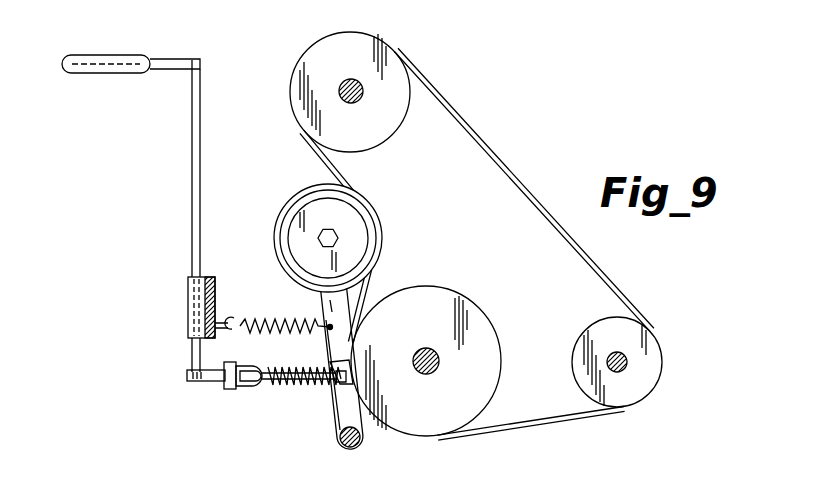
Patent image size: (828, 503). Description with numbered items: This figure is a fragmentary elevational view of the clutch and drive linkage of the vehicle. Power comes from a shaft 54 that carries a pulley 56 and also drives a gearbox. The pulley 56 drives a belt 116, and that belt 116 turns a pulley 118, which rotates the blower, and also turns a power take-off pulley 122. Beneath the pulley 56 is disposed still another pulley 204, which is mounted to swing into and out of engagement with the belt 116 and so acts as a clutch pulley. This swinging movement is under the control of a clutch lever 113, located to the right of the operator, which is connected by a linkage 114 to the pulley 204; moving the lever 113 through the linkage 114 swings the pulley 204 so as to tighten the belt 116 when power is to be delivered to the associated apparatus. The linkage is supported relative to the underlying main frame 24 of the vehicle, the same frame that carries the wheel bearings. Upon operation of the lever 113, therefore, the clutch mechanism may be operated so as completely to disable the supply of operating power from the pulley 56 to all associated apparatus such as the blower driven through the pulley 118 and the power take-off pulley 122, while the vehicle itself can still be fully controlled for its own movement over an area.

The clutch lever 113 is at (82, 56).
The main frame 24 is at (217, 294).
The linkage 114 is at (264, 386).
The pulley 56 is at (323, 92).
The shaft 54 is at (356, 95).
The pulley 204 is at (286, 209).
The belt 116 is at (610, 283).
The power take-off pulley 122 is at (486, 310).
The pulley 118 is at (662, 343).